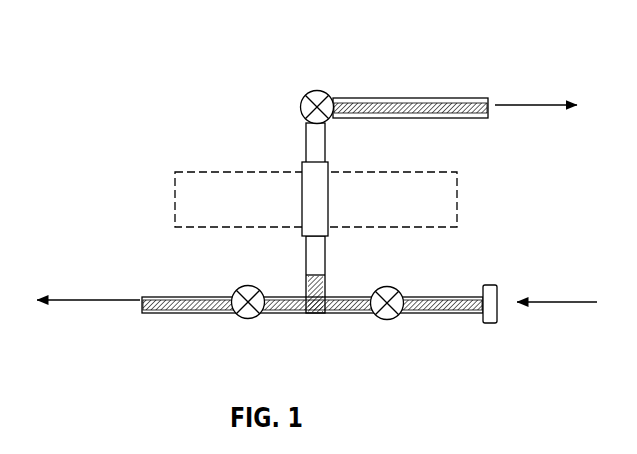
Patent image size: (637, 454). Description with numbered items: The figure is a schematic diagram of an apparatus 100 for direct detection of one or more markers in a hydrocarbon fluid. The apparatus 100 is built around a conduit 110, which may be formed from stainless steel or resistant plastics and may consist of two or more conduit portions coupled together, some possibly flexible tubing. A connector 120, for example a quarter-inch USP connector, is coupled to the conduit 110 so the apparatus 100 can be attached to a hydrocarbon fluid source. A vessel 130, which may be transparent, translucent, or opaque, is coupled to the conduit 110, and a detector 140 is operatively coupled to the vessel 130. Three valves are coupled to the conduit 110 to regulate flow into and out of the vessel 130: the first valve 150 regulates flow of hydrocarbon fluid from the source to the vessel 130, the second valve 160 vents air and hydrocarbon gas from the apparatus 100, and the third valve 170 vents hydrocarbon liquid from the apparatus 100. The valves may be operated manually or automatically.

The apparatus 100 is at (103, 118).
The conduit 110 is at (423, 97).
The connector 120 is at (487, 325).
The vessel 130 is at (301, 254).
The detector 140 is at (246, 213).
The first valve 150 is at (386, 321).
The second valve 160 is at (318, 89).
The third valve 170 is at (250, 320).